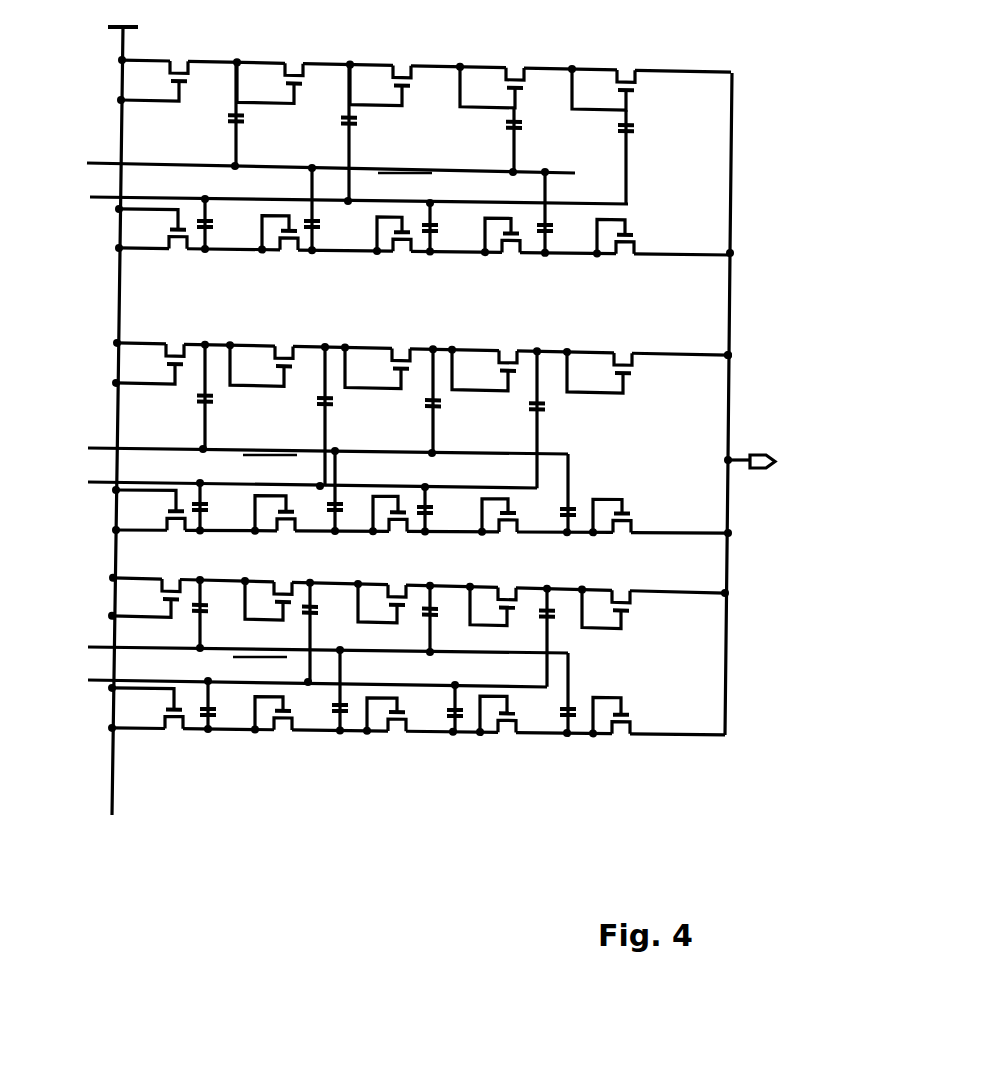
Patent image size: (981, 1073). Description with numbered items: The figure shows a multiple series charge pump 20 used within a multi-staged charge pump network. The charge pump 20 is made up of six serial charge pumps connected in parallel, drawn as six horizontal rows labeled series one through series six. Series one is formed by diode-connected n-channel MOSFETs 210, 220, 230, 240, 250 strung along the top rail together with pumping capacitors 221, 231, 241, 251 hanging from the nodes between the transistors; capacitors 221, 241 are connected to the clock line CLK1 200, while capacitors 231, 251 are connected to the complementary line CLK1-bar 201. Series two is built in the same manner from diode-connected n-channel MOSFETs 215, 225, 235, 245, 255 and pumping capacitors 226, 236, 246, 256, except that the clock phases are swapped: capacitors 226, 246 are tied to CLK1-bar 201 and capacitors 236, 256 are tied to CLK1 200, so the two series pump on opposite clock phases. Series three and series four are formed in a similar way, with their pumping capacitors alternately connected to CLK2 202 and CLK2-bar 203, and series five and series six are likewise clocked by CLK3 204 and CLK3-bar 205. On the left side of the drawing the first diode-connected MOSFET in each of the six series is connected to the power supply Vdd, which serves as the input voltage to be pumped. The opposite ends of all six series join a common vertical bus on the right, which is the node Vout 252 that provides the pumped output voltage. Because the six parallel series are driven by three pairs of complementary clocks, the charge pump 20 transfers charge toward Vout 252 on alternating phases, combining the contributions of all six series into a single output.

The multiple series charge pump 20 is at (421, 834).
The CLK1 200 is at (301, 163).
The CLK1-bar 201 is at (328, 190).
The CLK2 202 is at (296, 443).
The CLK2-bar 203 is at (281, 473).
The CLK3 204 is at (296, 641).
The CLK3-bar 205 is at (286, 673).
The diode-connected n-channel MOSFET 210 is at (167, 56).
The diode-connected n-channel MOSFET 220 is at (280, 57).
The diode-connected n-channel MOSFET 230 is at (395, 58).
The diode-connected n-channel MOSFET 240 is at (503, 60).
The diode-connected n-channel MOSFET 250 is at (615, 63).
The pumping capacitor 221 is at (273, 115).
The pumping capacitor 231 is at (384, 133).
The pumping capacitor 241 is at (548, 141).
The pumping capacitor 251 is at (660, 158).
The diode-connected n-channel MOSFET 215 is at (153, 253).
The diode-connected n-channel MOSFET 225 is at (280, 256).
The diode-connected n-channel MOSFET 235 is at (396, 257).
The diode-connected n-channel MOSFET 245 is at (503, 259).
The diode-connected n-channel MOSFET 255 is at (615, 260).
The pumping capacitor 226 is at (230, 224).
The pumping capacitor 236 is at (338, 209).
The pumping capacitor 246 is at (454, 227).
The pumping capacitor 256 is at (568, 213).
The node Vout 252 is at (777, 435).